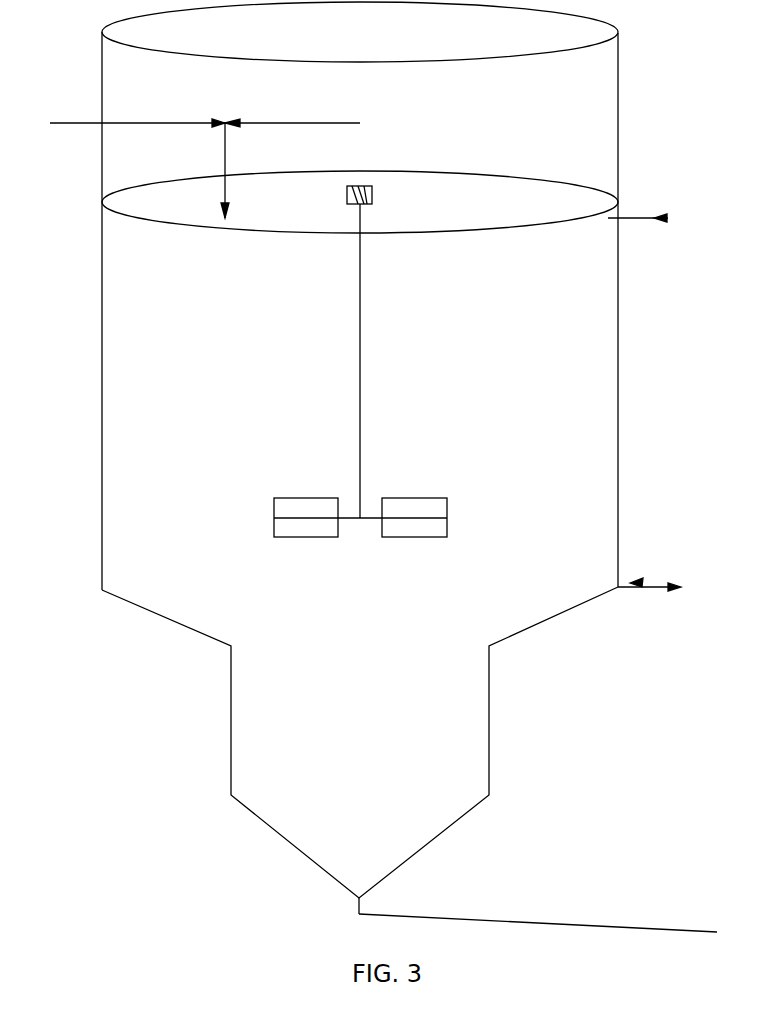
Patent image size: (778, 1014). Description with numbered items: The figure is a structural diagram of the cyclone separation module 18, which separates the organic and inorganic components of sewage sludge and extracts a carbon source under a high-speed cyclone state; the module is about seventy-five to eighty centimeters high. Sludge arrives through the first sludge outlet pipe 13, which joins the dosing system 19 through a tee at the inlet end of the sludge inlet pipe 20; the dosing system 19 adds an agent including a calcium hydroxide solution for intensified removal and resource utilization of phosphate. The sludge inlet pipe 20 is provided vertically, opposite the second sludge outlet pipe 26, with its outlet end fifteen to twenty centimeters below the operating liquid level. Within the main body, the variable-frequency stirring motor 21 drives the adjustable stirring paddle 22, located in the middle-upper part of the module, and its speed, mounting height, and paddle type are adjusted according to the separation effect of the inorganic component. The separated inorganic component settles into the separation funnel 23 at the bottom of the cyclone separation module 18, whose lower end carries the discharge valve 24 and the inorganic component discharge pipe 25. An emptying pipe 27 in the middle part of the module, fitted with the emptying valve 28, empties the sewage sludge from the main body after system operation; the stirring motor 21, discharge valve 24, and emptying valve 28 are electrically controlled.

The first sludge outlet pipe 13 is at (292, 139).
The cyclone separation module 18 is at (360, 296).
The dosing system 19 is at (137, 101).
The sludge inlet pipe 20 is at (255, 170).
The variable-frequency stirring motor 21 is at (384, 207).
The adjustable stirring paddle 22 is at (384, 370).
The separation funnel 23 is at (360, 742).
The discharge valve 24 is at (401, 898).
The inorganic component discharge pipe 25 is at (538, 905).
The second sludge outlet pipe 26 is at (656, 206).
The emptying pipe 27 is at (661, 605).
The emptying valve 28 is at (662, 566).